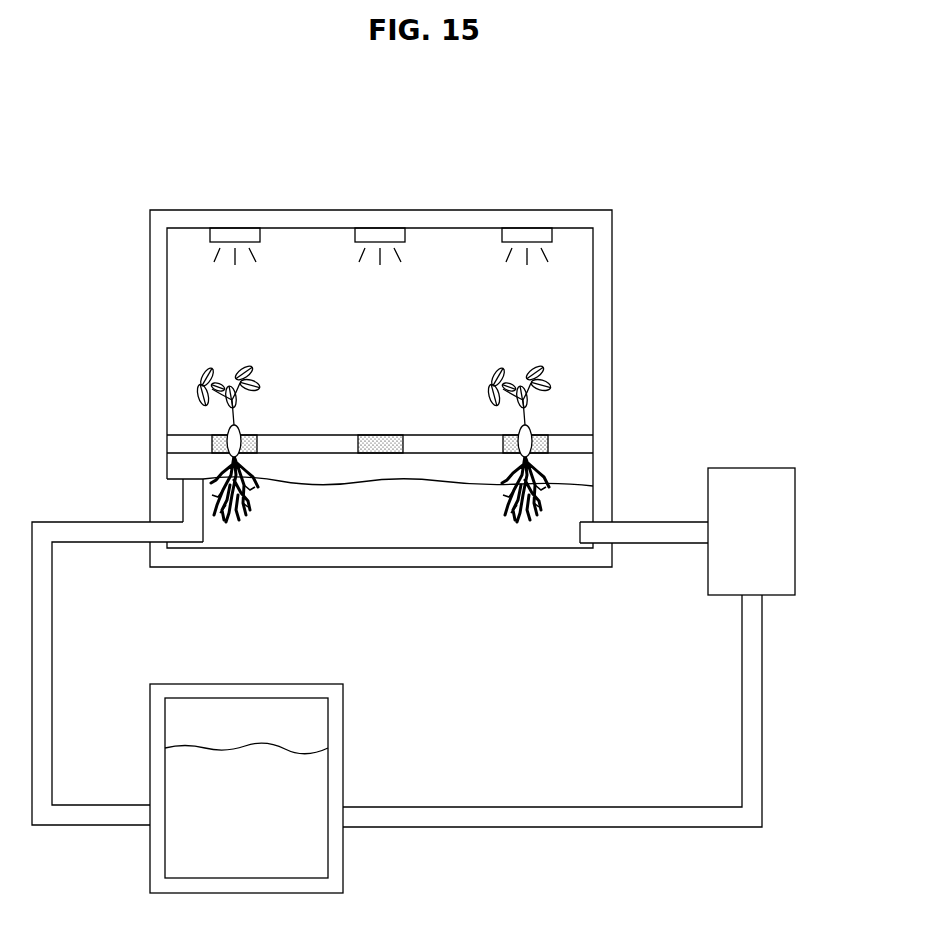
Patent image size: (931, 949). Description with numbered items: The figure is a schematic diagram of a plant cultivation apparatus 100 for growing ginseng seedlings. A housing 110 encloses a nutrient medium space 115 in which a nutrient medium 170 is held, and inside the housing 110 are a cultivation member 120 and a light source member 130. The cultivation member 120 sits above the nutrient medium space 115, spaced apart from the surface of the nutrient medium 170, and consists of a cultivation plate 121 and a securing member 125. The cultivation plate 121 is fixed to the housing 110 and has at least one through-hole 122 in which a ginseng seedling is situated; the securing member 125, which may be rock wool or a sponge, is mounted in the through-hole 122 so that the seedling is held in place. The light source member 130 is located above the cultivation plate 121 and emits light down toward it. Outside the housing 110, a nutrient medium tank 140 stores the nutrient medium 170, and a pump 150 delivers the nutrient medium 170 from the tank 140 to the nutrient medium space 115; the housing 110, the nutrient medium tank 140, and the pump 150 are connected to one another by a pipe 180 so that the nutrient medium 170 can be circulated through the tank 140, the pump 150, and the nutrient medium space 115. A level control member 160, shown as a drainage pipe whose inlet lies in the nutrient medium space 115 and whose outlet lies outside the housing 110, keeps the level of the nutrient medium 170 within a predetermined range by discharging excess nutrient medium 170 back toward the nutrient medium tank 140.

The plant cultivation apparatus 100 is at (87, 98).
The housing 110 is at (612, 264).
The nutrient medium space 115 is at (330, 459).
The cultivation member 120 is at (676, 391).
The cultivation plate 121 is at (583, 443).
The through-hole 122 is at (215, 436).
The securing member 125 is at (545, 430).
The light source member 130 is at (522, 229).
The nutrient medium tank 140 is at (343, 857).
The pump 150 is at (776, 467).
The level control member 160 is at (130, 522).
The nutrient medium 170 is at (462, 532).
The pipe 180 is at (762, 735).